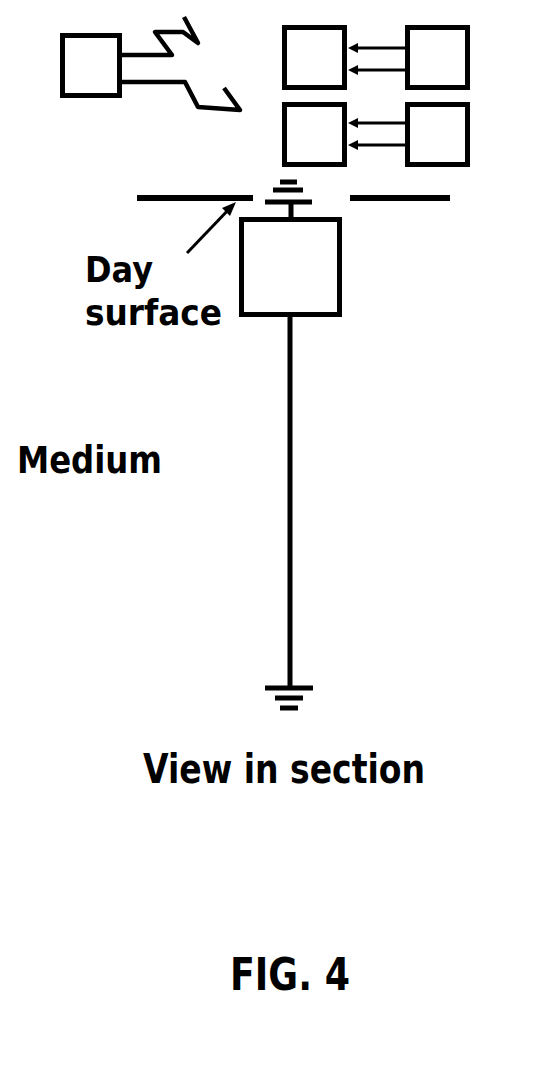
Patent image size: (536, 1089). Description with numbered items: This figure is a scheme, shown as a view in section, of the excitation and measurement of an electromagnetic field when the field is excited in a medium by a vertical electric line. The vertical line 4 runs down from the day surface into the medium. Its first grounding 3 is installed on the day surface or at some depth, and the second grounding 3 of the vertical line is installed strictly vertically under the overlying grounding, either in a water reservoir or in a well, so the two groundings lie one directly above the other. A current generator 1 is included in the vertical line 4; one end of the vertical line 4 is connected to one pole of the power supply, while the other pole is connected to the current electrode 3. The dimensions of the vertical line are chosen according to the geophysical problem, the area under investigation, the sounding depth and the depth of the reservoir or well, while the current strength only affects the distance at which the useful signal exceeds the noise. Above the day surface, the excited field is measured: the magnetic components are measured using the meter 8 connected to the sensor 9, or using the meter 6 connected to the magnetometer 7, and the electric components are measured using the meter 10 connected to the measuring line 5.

The current generator 1 is at (291, 267).
The grounding 3 is at (305, 449).
The vertical line 4 is at (308, 502).
The measuring line 5 is at (181, 63).
The meter 6 is at (315, 135).
The magnetometer 7 is at (408, 135).
The meter 8 is at (315, 58).
The sensor 9 is at (408, 58).
The meter 10 is at (91, 66).